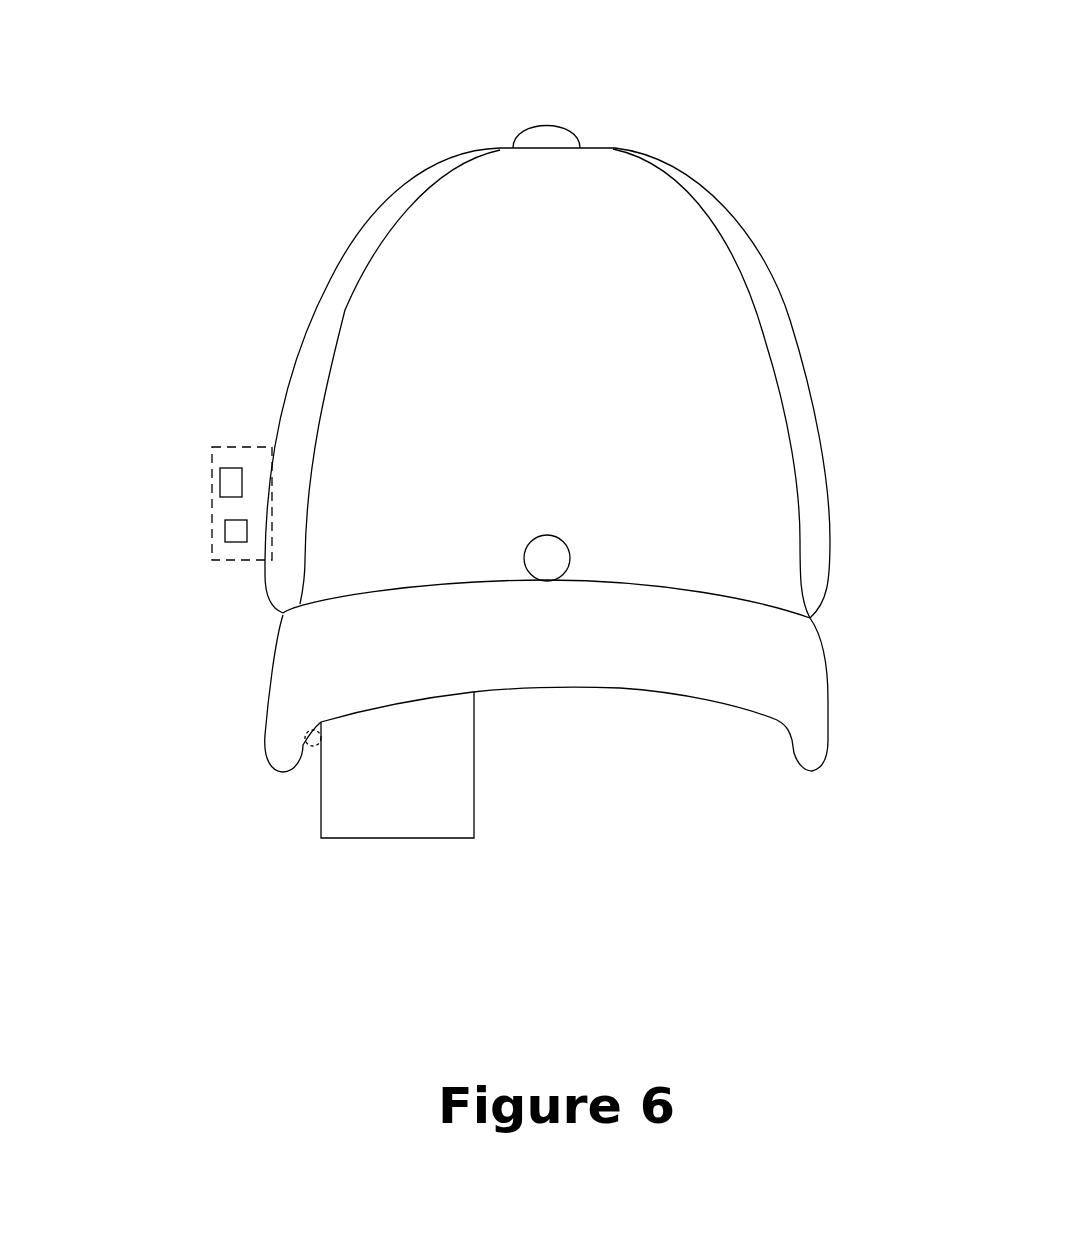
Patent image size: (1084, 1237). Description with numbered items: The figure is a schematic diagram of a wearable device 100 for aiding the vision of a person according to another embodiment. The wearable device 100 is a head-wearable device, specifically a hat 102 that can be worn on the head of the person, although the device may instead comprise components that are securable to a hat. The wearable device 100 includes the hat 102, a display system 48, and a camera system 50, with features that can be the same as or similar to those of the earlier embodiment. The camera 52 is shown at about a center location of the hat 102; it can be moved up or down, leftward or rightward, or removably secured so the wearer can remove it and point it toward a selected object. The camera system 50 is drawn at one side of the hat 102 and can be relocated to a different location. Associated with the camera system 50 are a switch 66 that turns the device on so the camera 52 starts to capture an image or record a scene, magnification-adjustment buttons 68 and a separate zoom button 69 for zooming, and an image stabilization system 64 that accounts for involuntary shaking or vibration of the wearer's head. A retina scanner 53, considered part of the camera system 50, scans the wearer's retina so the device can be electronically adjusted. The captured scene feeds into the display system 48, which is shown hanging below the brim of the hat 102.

The wearable device 100 is at (866, 62).
The hat 102 is at (780, 297).
The camera system 50 is at (250, 447).
The camera 52 is at (546, 534).
The retina scanner 53 is at (306, 746).
The display system 48 is at (474, 785).
The image stabilization system 64 is at (225, 533).
The switch 66 is at (220, 478).
The magnification-adjustment buttons 68 is at (144, 493).
The zoom button 69 is at (144, 493).